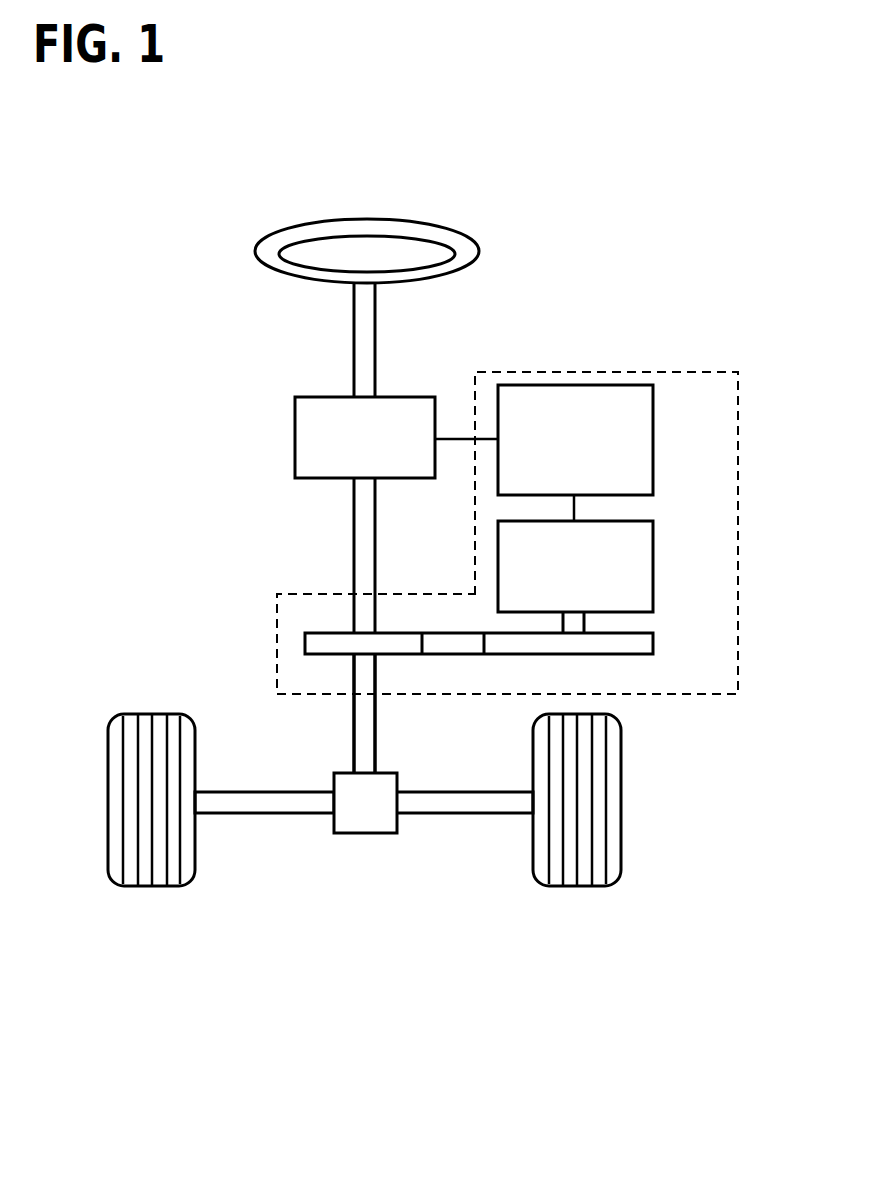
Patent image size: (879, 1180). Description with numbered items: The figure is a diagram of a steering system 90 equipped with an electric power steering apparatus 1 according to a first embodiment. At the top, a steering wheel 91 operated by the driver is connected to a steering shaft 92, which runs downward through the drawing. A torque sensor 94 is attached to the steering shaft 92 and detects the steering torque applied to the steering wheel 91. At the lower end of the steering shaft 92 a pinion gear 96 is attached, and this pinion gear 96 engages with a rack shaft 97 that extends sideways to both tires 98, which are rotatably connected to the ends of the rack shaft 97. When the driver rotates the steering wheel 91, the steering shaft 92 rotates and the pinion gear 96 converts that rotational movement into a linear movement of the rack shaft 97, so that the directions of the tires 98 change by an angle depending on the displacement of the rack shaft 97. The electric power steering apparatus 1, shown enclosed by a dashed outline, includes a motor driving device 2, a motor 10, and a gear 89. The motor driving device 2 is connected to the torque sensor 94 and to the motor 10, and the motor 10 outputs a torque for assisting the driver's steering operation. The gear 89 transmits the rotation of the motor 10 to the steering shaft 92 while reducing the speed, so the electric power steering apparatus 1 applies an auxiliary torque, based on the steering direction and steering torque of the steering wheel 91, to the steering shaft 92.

The electric power steering apparatus 1 is at (740, 400).
The motor driving device 2 is at (653, 413).
The motor 10 is at (653, 547).
The gear 89 is at (653, 640).
The steering system 90 is at (272, 1022).
The steering wheel 91 is at (254, 250).
The steering shaft 92 is at (354, 312).
The torque sensor 94 is at (295, 416).
The pinion gear 96 is at (350, 833).
The rack shaft 97 is at (253, 813).
The tires 98 is at (163, 886).